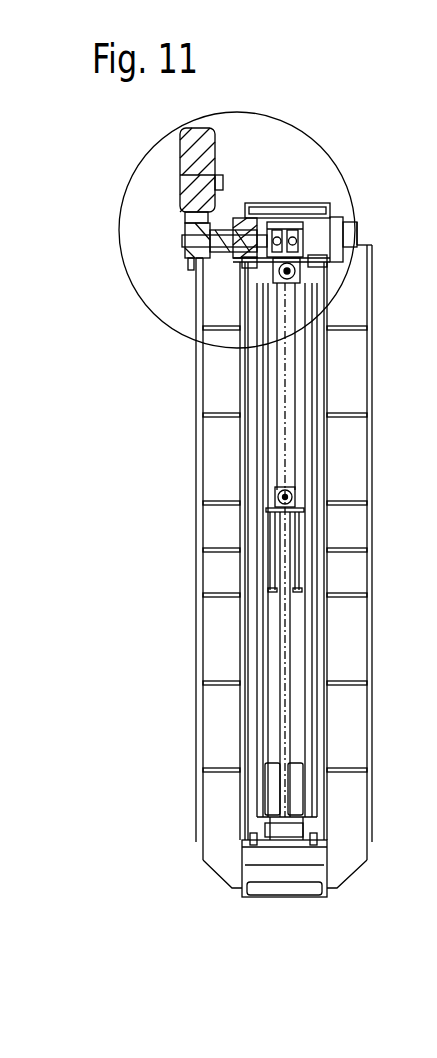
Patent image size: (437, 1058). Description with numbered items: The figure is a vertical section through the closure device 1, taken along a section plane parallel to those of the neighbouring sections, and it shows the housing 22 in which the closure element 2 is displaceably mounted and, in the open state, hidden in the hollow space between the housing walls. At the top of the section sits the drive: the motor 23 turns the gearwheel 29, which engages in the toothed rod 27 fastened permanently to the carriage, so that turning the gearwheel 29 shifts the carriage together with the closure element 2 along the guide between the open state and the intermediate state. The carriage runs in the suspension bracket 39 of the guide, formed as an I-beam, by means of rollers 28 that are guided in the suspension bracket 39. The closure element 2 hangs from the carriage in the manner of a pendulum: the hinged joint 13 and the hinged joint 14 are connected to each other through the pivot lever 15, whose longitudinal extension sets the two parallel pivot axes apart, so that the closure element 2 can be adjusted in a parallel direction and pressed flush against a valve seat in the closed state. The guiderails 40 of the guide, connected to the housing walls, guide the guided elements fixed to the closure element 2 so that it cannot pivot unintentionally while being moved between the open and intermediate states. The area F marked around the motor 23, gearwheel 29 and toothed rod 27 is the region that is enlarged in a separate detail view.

The closure device 1 is at (283, 190).
The closure element 2 is at (298, 365).
The hinged joint 13 is at (292, 273).
The hinged joint 14 is at (295, 497).
The pivot lever 15 is at (285, 430).
The housing 22 is at (343, 843).
The motor 23 is at (192, 193).
The toothed rod 27 is at (263, 220).
The rollers 28 is at (298, 237).
The gearwheel 29 is at (260, 248).
The suspension bracket 39 is at (283, 235).
The guiderails 40 is at (317, 260).
The area F is at (248, 110).